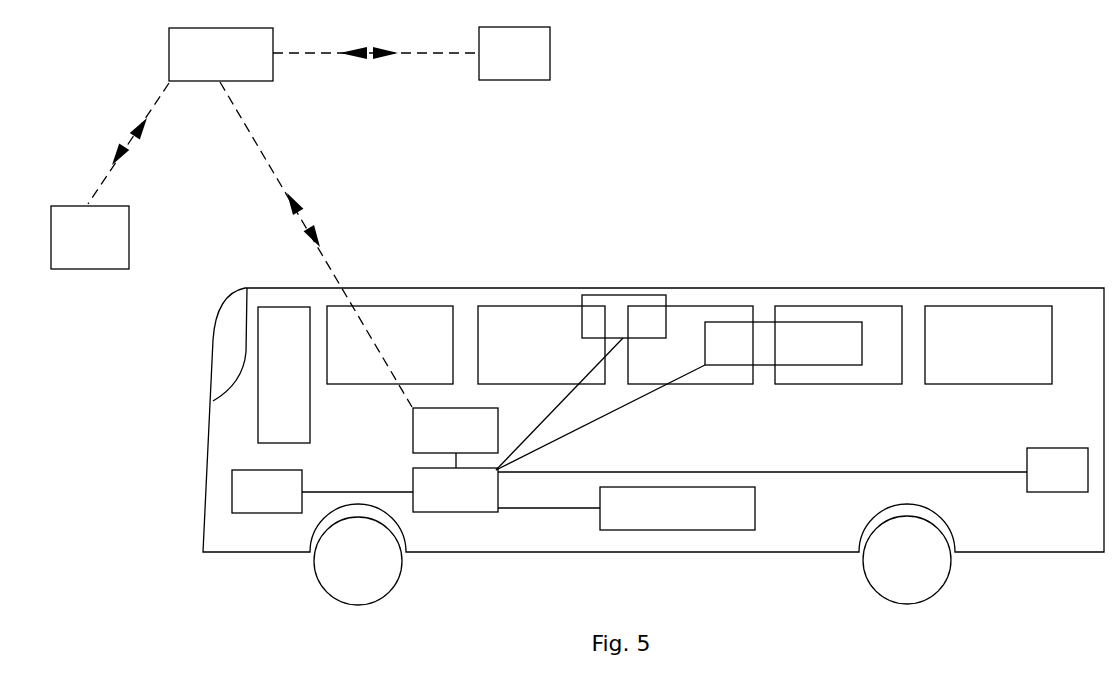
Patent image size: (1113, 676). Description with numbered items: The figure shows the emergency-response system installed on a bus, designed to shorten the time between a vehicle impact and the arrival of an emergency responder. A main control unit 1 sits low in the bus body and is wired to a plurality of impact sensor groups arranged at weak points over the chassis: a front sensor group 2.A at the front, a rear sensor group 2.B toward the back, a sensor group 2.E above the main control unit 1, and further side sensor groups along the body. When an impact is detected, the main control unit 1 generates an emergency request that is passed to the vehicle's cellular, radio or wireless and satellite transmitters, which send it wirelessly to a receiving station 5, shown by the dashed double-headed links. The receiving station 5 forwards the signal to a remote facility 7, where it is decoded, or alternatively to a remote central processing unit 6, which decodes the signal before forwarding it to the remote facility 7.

The main control unit 1 is at (455, 490).
The front sensor group 2.A is at (267, 491).
The rear sensor group 2.B is at (1057, 470).
The side sensor group 2.E is at (624, 316).
The receiving station 5 is at (221, 54).
The remote central processing unit 6 is at (90, 237).
The remote facility 7 is at (514, 53).